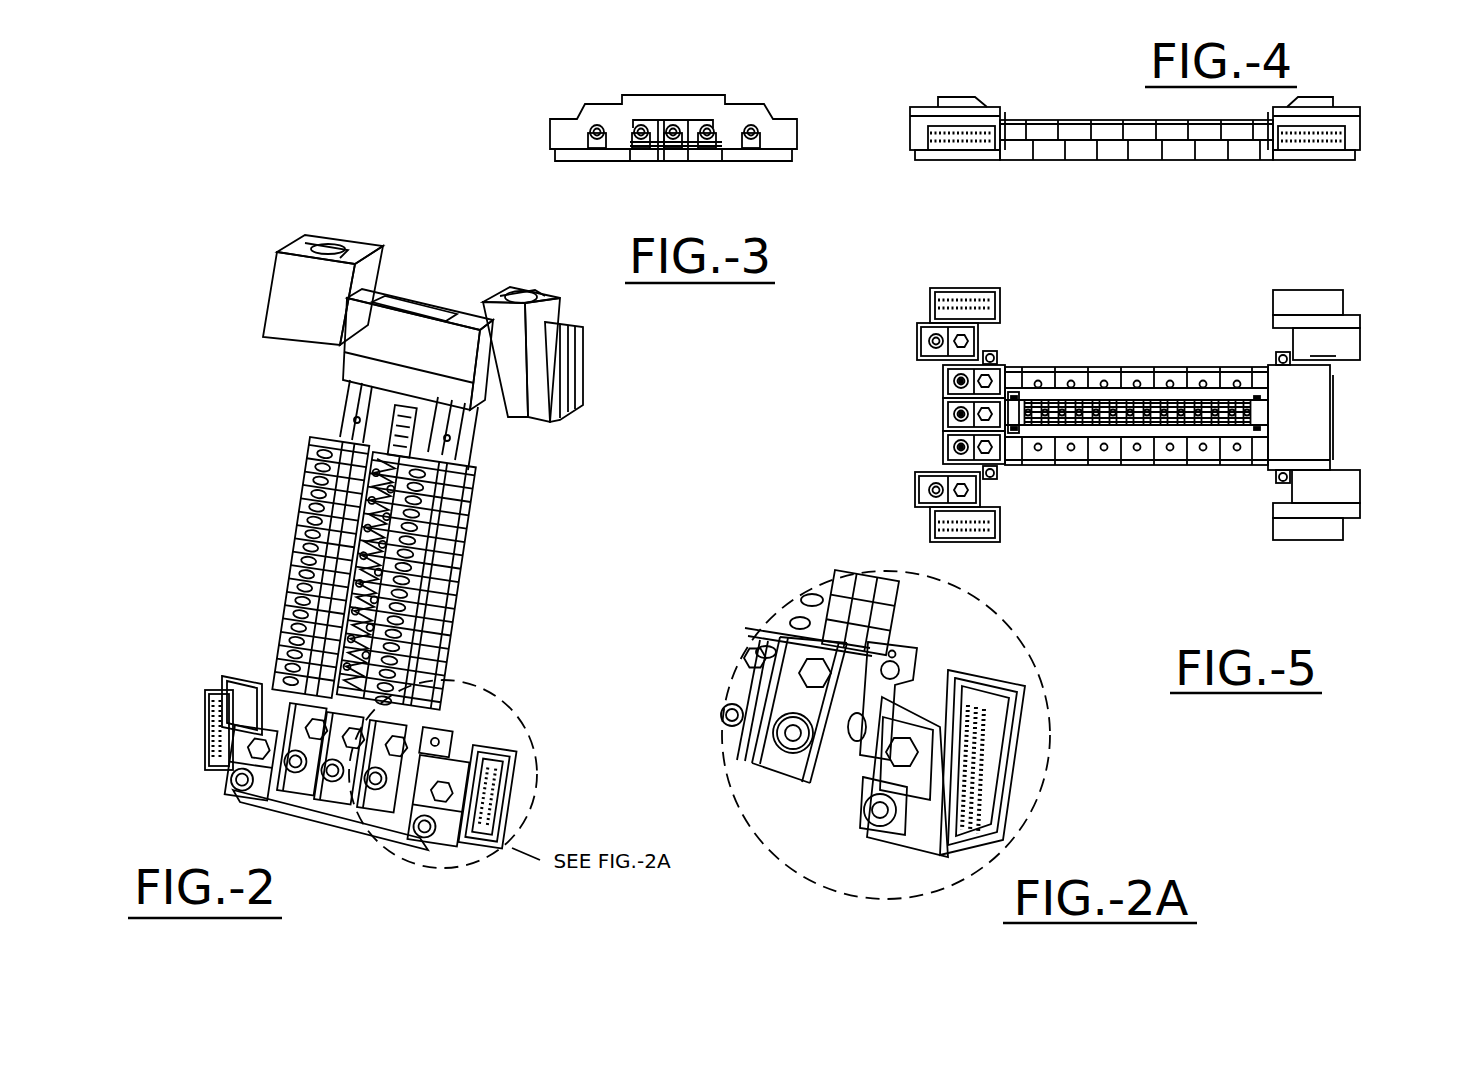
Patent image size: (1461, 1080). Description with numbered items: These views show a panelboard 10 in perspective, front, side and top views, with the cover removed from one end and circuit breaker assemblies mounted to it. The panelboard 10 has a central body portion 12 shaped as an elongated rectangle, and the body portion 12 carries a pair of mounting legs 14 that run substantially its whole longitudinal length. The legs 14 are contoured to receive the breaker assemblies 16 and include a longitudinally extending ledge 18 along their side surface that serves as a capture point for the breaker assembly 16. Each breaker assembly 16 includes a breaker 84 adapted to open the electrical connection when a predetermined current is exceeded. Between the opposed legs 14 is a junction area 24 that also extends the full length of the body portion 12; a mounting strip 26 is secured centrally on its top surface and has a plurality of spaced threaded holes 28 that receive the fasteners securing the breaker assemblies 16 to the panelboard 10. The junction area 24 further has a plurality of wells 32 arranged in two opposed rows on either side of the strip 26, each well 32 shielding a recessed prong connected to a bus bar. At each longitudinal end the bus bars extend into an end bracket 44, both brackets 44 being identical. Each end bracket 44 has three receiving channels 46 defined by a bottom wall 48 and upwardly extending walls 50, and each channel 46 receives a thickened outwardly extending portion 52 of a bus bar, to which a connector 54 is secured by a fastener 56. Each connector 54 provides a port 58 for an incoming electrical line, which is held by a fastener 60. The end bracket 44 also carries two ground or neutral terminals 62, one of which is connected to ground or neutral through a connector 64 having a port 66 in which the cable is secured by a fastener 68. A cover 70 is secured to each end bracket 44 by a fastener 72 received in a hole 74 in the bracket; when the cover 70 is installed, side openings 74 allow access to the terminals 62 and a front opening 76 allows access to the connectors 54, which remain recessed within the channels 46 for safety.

In FIG. 3, the panelboard 10 is at (540, 78).
In FIG. 4, the panelboard 10 is at (1330, 85).
In FIG. 5, the panelboard 10 is at (1172, 548).
In FIG. 2, the panelboard 10 is at (188, 368).
In FIG. 4, the central body portion 12 is at (1203, 163).
In FIG. 5, the central body portion 12 is at (1225, 470).
In FIG. 2, the central body portion 12 is at (340, 410).
In FIG. 4, the mounting legs 14 is at (1097, 124).
In FIG. 5, the mounting legs 14 is at (1080, 368).
In FIG. 2, the breaker assembly 16 is at (477, 541).
In FIG. 4, the ledge 18 is at (1114, 128).
In FIG. 5, the junction area 24 is at (1136, 448).
In FIG. 2, the junction area 24 is at (405, 398).
In FIG. 5, the mounting strip 26 is at (1152, 405).
In FIG. 5, the threaded holes 28 is at (1248, 405).
In FIG. 5, the wells 32 is at (1194, 395).
In FIG. 2, the wells 32 is at (411, 438).
In FIG. 3, the end bracket 44 is at (742, 154).
In FIG. 4, the end bracket 44 is at (902, 110).
In FIG. 5, the end bracket 44 is at (1338, 420).
In FIG. 2, the end bracket 44 is at (440, 300).
In FIG. 5, the receiving channels 46 is at (942, 378).
In FIG. 5, the bottom wall 48 is at (945, 411).
In FIG. 2A, the upwardly extending walls 50 is at (758, 760).
In FIG. 2, the outwardly extending portion 52 is at (305, 778).
In FIG. 2A, the outwardly extending portion 52 is at (797, 727).
In FIG. 2A, the connector 54 is at (807, 768).
In FIG. 2A, the fastener 56 is at (822, 666).
In FIG. 3, the port 58 is at (641, 140).
In FIG. 5, the fastener 60 is at (959, 380).
In FIG. 4, the ground or neutral terminal 62 is at (966, 148).
In FIG. 5, the ground or neutral terminal 62 is at (962, 288).
In FIG. 2, the ground or neutral terminal 62 is at (207, 692).
In FIG. 2A, the ground or neutral terminal 62 is at (998, 785).
In FIG. 5, the connector 64 is at (962, 338).
In FIG. 2, the connector 64 is at (452, 772).
In FIG. 2A, the connector 64 is at (912, 716).
In FIG. 3, the port 66 is at (593, 130).
In FIG. 2A, the fastener 68 is at (880, 823).
In FIG. 5, the cover 70 is at (1326, 344).
In FIG. 2, the cover 70 is at (412, 340).
In FIG. 5, the fastener 72 is at (1280, 354).
In FIG. 4, the hole / side openings 74 is at (942, 146).
In FIG. 5, the hole / side openings 74 is at (1338, 430).
In FIG. 2, the hole / side openings 74 is at (577, 381).
In FIG. 3, the front opening 76 is at (664, 150).
In FIG. 5, the front opening 76 is at (1340, 448).
In FIG. 2, the front opening 76 is at (412, 286).
In FIG. 2, the breaker 84 is at (450, 582).